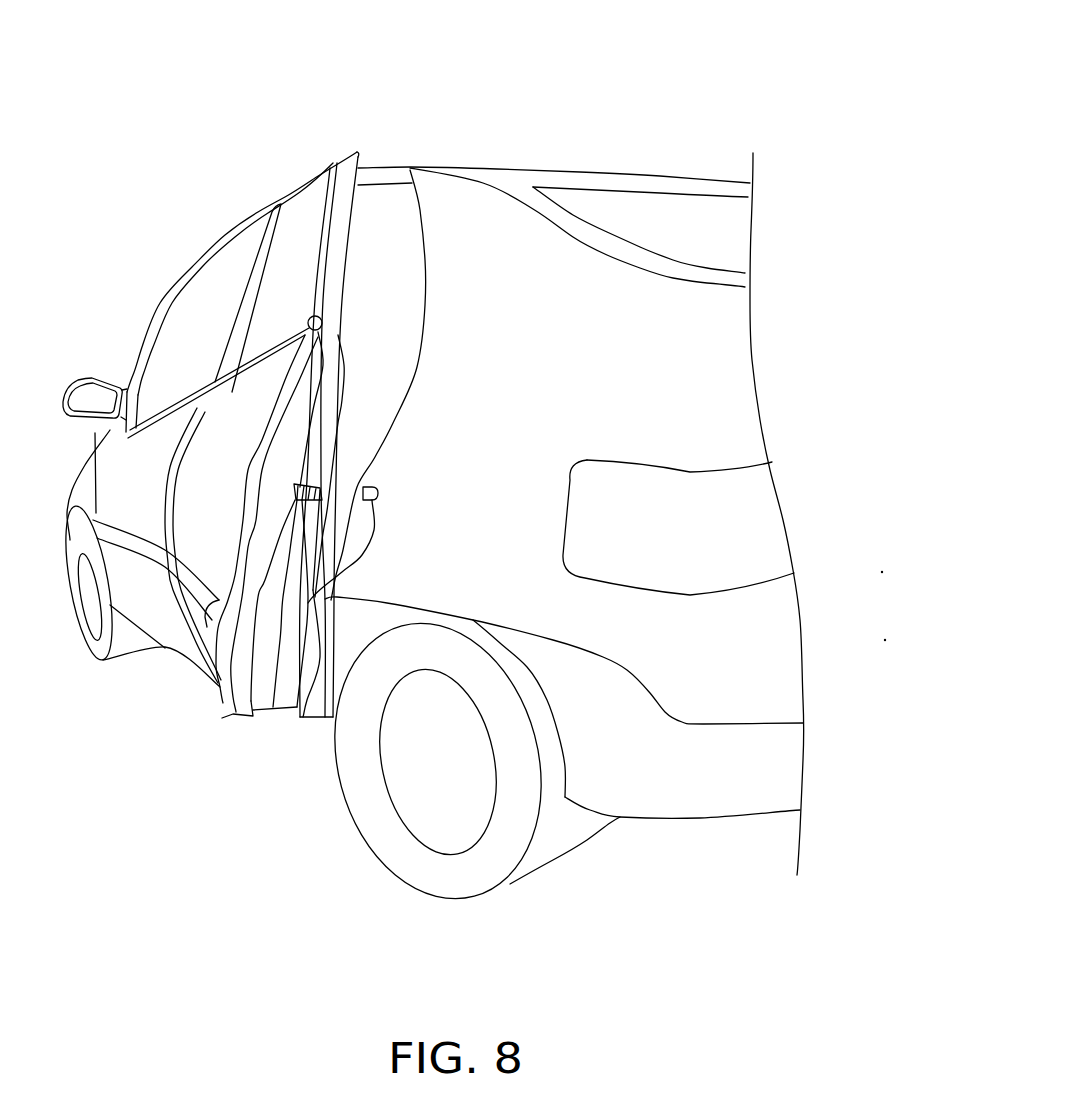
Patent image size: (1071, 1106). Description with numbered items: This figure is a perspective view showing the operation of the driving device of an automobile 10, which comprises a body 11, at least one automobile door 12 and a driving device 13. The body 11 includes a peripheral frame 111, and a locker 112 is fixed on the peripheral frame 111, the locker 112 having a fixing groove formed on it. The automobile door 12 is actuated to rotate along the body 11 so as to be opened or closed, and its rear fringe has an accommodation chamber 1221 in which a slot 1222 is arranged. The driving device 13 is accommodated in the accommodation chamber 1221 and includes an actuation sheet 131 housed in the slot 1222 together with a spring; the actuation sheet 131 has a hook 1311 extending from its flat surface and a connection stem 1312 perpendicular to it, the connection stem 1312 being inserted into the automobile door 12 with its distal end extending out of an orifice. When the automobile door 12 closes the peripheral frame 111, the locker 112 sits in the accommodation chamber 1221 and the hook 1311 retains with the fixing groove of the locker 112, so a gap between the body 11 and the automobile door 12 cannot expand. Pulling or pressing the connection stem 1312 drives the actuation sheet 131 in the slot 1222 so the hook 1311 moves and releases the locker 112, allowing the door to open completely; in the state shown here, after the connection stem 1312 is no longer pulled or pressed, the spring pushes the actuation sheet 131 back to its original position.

The automobile 10 is at (570, 109).
The body 11 is at (586, 163).
The peripheral frame 111 is at (382, 177).
The locker 112 is at (377, 487).
The automobile door 12 is at (299, 162).
The accommodation chamber 1221 is at (309, 318).
The slot 1222 is at (295, 488).
The driving device 13 is at (377, 933).
The actuation sheet 131 is at (273, 707).
The hook 1311 is at (328, 718).
The connection stem 1312 is at (223, 703).